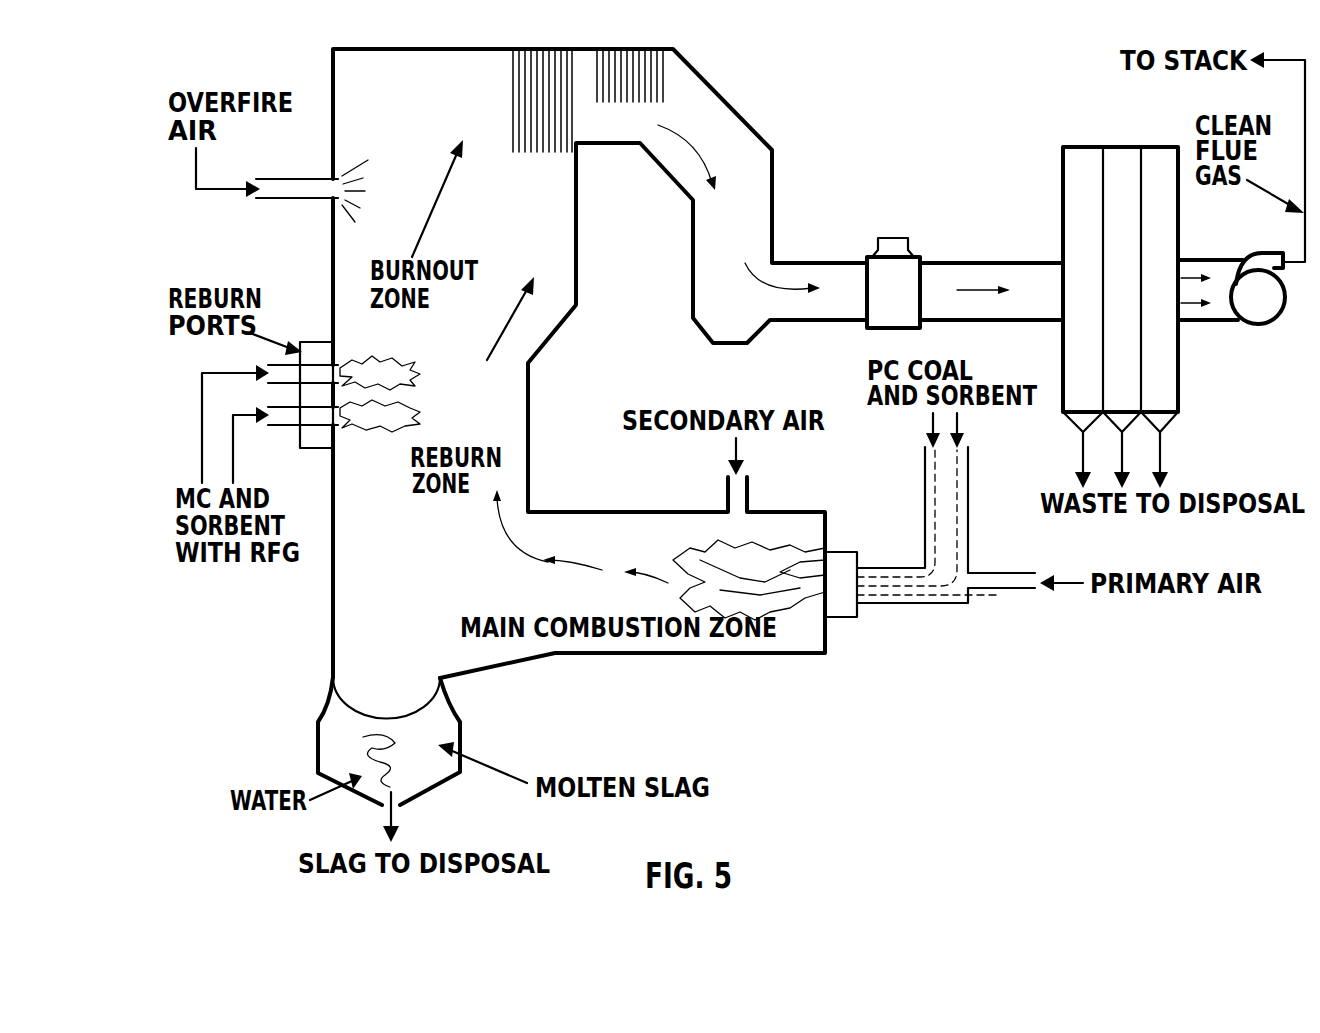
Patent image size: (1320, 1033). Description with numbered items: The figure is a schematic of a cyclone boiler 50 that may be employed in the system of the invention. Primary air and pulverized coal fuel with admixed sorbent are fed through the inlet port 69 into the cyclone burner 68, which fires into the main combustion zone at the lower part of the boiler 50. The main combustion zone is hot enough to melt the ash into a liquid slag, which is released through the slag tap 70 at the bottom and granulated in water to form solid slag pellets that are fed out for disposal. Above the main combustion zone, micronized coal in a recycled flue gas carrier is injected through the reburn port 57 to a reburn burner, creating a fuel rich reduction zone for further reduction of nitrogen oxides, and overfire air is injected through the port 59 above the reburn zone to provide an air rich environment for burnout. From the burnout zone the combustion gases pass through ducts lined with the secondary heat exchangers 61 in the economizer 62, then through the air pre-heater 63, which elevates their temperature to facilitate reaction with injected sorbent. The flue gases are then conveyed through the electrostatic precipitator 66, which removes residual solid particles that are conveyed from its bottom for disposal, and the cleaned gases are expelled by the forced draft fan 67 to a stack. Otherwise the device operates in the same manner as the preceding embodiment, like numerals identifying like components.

The boiler 50 is at (527, 461).
The reburn port 57 is at (310, 342).
The overfire air port 59 is at (294, 183).
The secondary heat exchangers 61 is at (560, 60).
The economizer 62 is at (727, 110).
The air pre-heater 63 is at (890, 247).
The electrostatic precipitator 66 is at (1115, 157).
The forced draft fan 67 is at (1258, 325).
The cyclone burner 68 is at (843, 614).
The inlet port 69 is at (898, 567).
The slag tap 70 is at (420, 708).